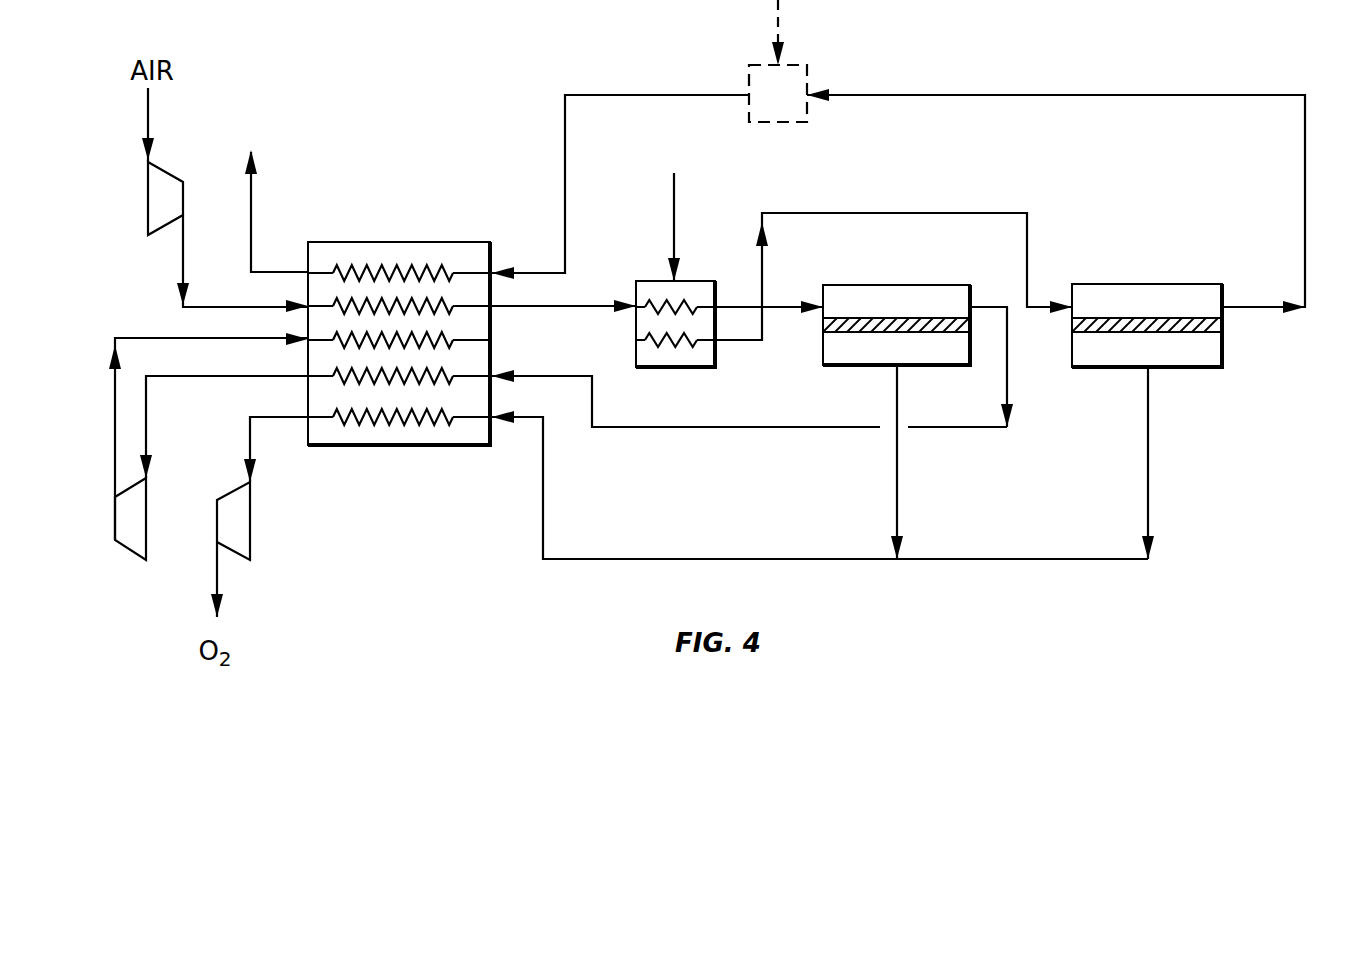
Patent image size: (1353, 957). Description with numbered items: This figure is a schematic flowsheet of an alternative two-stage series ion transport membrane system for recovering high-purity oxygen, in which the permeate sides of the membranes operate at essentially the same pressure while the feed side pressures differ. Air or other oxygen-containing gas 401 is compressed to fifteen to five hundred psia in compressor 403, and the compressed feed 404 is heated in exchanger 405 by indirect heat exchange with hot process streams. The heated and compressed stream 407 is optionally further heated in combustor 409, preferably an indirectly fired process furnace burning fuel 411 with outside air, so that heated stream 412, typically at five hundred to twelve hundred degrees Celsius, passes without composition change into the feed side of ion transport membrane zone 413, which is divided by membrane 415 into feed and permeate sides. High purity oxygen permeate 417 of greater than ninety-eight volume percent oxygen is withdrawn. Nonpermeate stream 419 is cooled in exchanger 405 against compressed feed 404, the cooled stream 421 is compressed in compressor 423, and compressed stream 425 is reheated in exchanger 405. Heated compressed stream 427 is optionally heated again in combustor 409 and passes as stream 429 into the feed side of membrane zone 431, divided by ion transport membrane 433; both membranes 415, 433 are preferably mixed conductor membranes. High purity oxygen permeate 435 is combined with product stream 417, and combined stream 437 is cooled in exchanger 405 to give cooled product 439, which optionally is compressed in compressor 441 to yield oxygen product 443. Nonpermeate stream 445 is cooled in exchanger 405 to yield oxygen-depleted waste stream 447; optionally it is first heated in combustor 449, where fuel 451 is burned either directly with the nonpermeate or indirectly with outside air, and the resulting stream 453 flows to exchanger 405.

The oxygen-containing gas 401 is at (148, 112).
The compressor 403 is at (143, 192).
The compressed feed 404 is at (182, 257).
The exchanger 405 is at (390, 241).
The heated and compressed stream 407 is at (592, 305).
The combustor 409 is at (675, 370).
The fuel 411 is at (675, 200).
The heated stream 412 is at (783, 305).
The ion transport membrane zone 413 is at (935, 283).
The membrane 415 is at (850, 333).
The high purity oxygen permeate 417 is at (897, 482).
The nonpermeate stream 419 is at (1007, 377).
The cooled stream 421 is at (146, 412).
The compressor 423 is at (125, 550).
The compressed stream 425 is at (115, 398).
The heated compressed stream 427 is at (575, 343).
The stream 429 is at (977, 212).
The membrane zone 431 is at (1143, 284).
The ion transport membrane 433 is at (1178, 332).
The high purity oxygen permeate 435 is at (1148, 505).
The combined stream 437 is at (617, 559).
The cooled product 439 is at (257, 448).
The compressor 441 is at (250, 527).
The oxygen product 443 is at (217, 570).
The nonpermeate stream 445 is at (1305, 168).
The oxygen-depleted waste stream 447 is at (253, 200).
The combustor 449 is at (807, 65).
The fuel 451 is at (778, 23).
The stream 453 is at (563, 162).